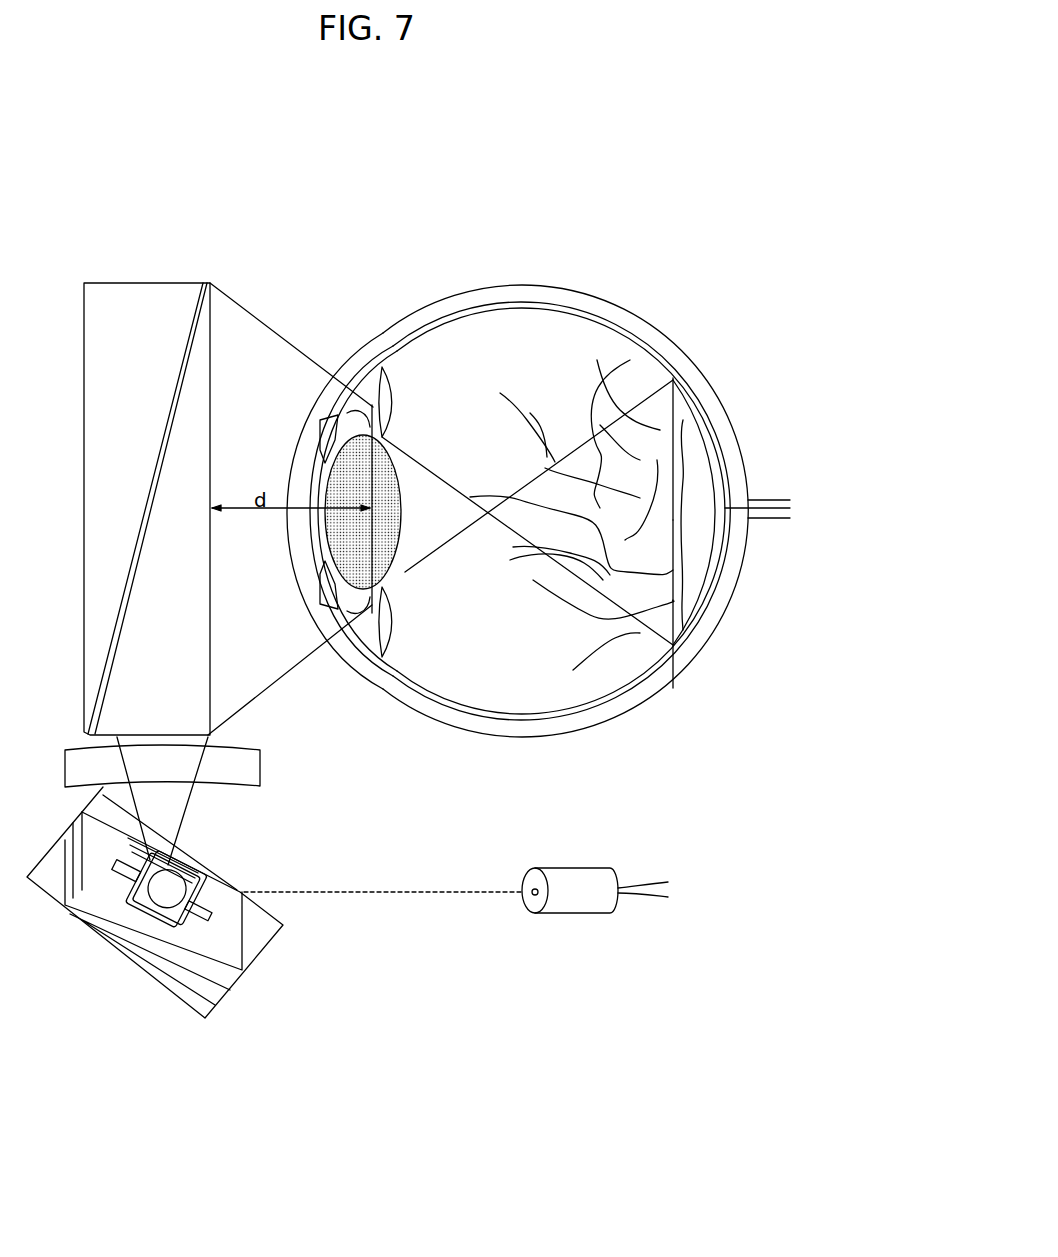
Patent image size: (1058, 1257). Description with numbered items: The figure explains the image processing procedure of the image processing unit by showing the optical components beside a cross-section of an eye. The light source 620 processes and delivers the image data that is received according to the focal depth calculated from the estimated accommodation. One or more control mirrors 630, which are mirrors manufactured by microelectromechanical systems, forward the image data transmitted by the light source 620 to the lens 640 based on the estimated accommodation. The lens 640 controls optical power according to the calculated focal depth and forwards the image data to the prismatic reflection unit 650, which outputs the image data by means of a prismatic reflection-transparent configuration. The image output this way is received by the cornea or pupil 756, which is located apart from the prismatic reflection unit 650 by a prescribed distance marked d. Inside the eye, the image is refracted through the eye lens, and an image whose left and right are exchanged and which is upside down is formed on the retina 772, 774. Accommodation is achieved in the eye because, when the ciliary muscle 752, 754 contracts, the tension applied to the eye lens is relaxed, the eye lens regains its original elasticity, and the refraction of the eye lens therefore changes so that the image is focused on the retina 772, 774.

The light source 620 is at (580, 910).
The control mirror 630 is at (265, 948).
The lens 640 is at (260, 770).
The prismatic reflection unit 650 is at (141, 283).
The ciliary muscle 752 is at (373, 405).
The ciliary muscle 754 is at (387, 670).
The pupil 756 is at (347, 416).
The retina 772 is at (673, 378).
The retina 774 is at (673, 688).